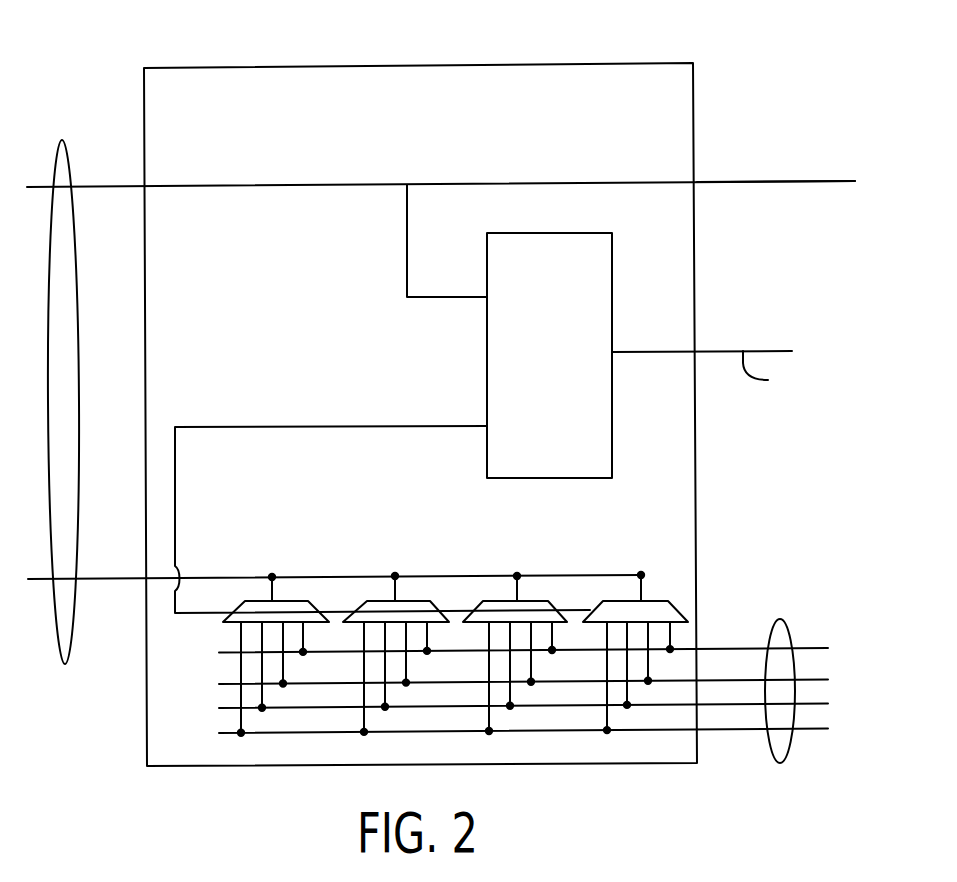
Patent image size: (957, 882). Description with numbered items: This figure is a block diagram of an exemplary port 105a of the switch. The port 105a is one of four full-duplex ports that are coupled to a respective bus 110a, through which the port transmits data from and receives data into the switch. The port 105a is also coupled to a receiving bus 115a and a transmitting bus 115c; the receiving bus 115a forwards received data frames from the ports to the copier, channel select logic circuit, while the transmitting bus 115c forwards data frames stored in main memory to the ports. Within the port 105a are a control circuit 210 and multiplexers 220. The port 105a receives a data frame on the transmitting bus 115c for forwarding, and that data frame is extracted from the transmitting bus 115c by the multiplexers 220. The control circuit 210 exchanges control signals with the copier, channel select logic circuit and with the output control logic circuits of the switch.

The port 105a is at (660, 64).
The bus 110a is at (62, 141).
The receiving bus 115a is at (782, 182).
The transmitting bus 115c is at (770, 749).
The control circuit 210 is at (547, 233).
The multiplexers 220 is at (285, 598).